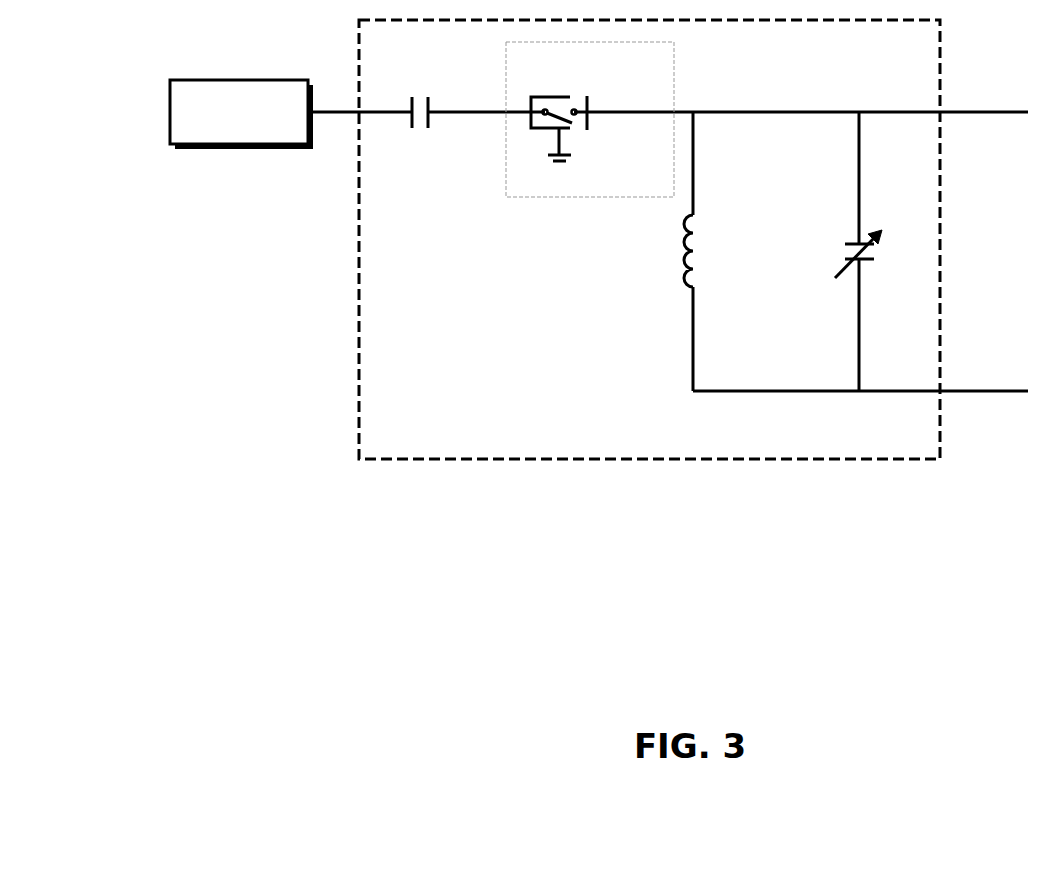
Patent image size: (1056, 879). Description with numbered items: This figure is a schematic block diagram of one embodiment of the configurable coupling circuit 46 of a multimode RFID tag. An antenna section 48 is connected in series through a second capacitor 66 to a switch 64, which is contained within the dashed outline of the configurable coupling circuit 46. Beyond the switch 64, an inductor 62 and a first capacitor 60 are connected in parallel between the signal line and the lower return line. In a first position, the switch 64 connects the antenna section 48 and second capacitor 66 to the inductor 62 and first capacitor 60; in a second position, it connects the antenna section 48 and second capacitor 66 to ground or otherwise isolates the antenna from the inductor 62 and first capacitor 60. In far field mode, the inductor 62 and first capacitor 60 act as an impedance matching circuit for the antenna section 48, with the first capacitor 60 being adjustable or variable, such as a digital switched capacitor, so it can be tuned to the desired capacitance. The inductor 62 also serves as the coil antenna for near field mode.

The antenna section 48 is at (240, 80).
The configurable coupling circuit 46 is at (649, 239).
The second capacitor C2 66 is at (428, 118).
The switch 64 is at (587, 120).
The inductor L1 62 is at (684, 253).
The capacitor C1 60 is at (870, 262).